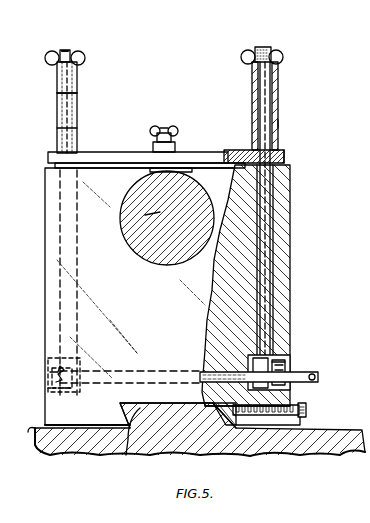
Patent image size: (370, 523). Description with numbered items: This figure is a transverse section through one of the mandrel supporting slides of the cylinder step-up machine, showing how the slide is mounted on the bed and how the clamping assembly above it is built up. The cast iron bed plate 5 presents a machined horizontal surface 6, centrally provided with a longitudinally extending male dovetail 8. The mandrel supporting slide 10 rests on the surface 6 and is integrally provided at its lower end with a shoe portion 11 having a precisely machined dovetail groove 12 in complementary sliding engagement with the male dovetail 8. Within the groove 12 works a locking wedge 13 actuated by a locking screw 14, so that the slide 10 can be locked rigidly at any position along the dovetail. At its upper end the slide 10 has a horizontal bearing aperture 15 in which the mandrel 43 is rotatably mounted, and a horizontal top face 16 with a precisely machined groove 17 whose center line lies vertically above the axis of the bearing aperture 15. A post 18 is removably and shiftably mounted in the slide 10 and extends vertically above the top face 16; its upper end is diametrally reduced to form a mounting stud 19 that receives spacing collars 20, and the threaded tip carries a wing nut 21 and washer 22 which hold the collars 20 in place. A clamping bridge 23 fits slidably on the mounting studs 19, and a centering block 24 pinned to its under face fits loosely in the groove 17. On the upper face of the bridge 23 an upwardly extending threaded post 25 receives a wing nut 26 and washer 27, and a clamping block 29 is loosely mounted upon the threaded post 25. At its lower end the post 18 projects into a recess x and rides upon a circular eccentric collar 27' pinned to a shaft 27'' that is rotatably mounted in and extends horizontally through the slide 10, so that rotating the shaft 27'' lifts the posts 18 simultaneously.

The bed plate 5 is at (45, 453).
The horizontal surface 6 is at (28, 432).
The male dovetail 8 is at (172, 410).
The mandrel supporting slide 10 is at (290, 240).
The shoe portion 11 is at (288, 398).
The dovetail groove 12 is at (126, 455).
The locking wedge 13 is at (222, 432).
The locking screw 14 is at (307, 412).
The bearing aperture 15 is at (152, 250).
The horizontal top face 16 is at (290, 164).
The groove 17 is at (192, 171).
The post 18 is at (60, 233).
The mounting stud 19 is at (68, 48).
The spacing collar 20 is at (55, 136).
The wing nut 21 is at (48, 62).
The washer 22 is at (58, 68).
The clamping bridge 23 is at (108, 160).
The centering block 24 is at (160, 168).
The threaded post 25 is at (167, 130).
The wing nut 26 is at (176, 128).
The washer 27 is at (188, 121).
The eccentric collar 27' is at (170, 353).
The shaft 27'' is at (210, 368).
The clamping block 29 is at (150, 150).
The mandrel 43 is at (135, 223).
The recess x is at (285, 358).